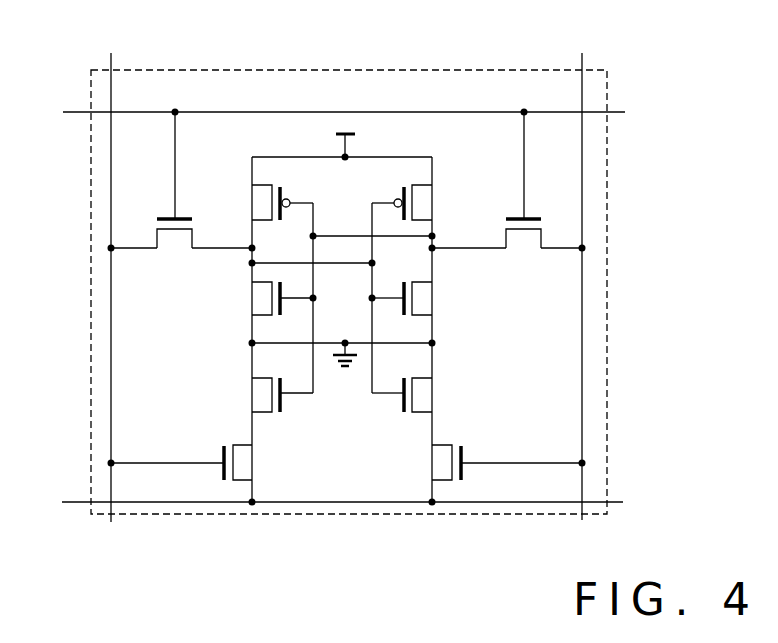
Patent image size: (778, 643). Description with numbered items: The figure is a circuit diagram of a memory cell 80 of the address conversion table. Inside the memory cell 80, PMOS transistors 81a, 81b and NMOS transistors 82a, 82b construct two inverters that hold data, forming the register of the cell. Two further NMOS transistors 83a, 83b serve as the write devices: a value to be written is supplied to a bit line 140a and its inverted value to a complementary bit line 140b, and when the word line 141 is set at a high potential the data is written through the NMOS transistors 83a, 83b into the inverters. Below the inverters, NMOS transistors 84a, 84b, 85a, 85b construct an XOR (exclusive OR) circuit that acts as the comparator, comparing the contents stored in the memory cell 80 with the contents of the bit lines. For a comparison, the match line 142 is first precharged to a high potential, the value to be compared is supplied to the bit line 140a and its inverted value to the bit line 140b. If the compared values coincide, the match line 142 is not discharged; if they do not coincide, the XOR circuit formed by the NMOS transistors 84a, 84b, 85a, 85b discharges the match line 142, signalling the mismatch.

The memory cell 80 is at (303, 70).
The PMOS transistor 81a is at (267, 202).
The PMOS transistor 81b is at (415, 202).
The NMOS transistor 82a is at (267, 299).
The NMOS transistor 82b is at (415, 299).
The NMOS transistor 83a is at (174, 195).
The NMOS transistor 83b is at (523, 195).
The NMOS transistor 84a is at (267, 394).
The NMOS transistor 84b is at (415, 394).
The NMOS transistor 85a is at (254, 462).
The NMOS transistor 85b is at (429, 462).
The bit line 140a is at (111, 62).
The bit line 140b is at (582, 62).
The word line 141 is at (612, 111).
The match line 142 is at (614, 501).